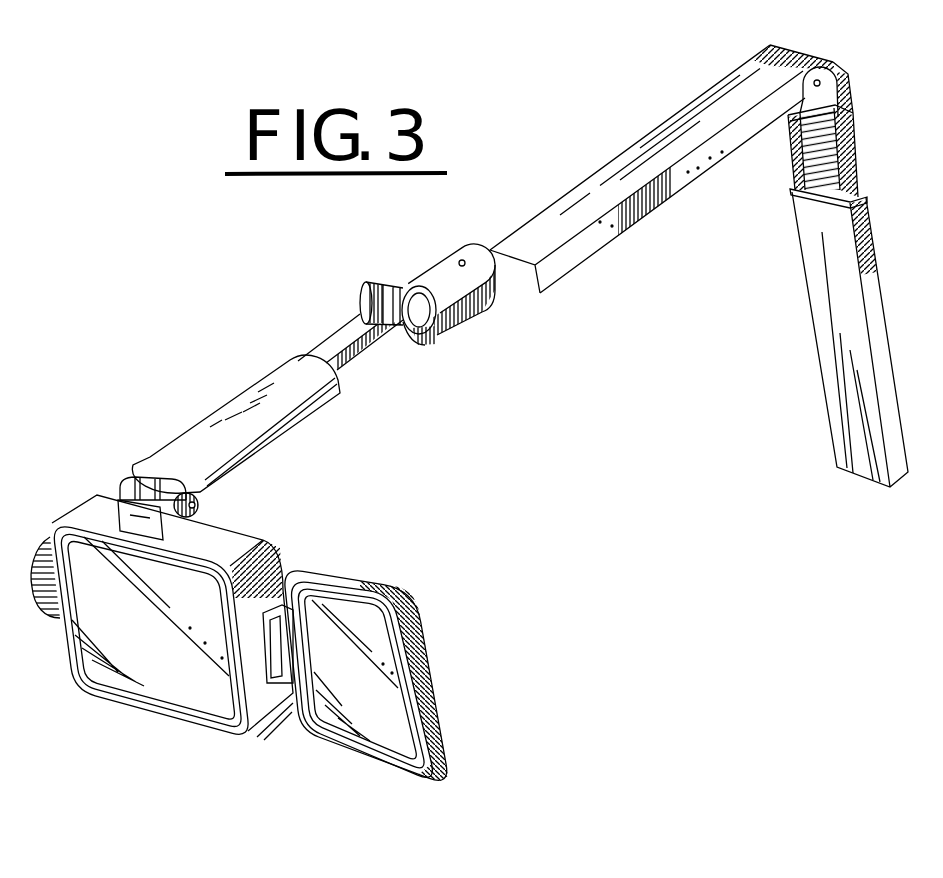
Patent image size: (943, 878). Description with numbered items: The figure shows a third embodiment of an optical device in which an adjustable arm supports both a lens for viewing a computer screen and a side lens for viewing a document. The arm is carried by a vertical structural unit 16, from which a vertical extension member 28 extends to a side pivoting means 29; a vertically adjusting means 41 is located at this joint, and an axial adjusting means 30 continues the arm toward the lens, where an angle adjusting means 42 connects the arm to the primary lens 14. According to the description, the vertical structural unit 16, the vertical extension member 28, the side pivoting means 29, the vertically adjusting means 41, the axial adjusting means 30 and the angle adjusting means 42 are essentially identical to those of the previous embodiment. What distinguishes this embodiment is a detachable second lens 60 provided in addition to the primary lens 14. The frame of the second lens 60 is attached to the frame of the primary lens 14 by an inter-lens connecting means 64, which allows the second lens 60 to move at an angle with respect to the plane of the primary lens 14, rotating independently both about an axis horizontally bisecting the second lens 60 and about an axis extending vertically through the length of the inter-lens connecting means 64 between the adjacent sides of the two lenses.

The primary lens 14 is at (166, 690).
The vertical structural unit 16 is at (812, 294).
The vertical extension member 28 is at (558, 203).
The side pivoting means 29 is at (428, 272).
The axial adjusting means 30 is at (211, 409).
The vertically adjusting means 41 is at (358, 297).
The angle adjusting means 42 is at (119, 489).
The second lens 60 is at (383, 670).
The inter-lens connecting means 64 is at (258, 662).